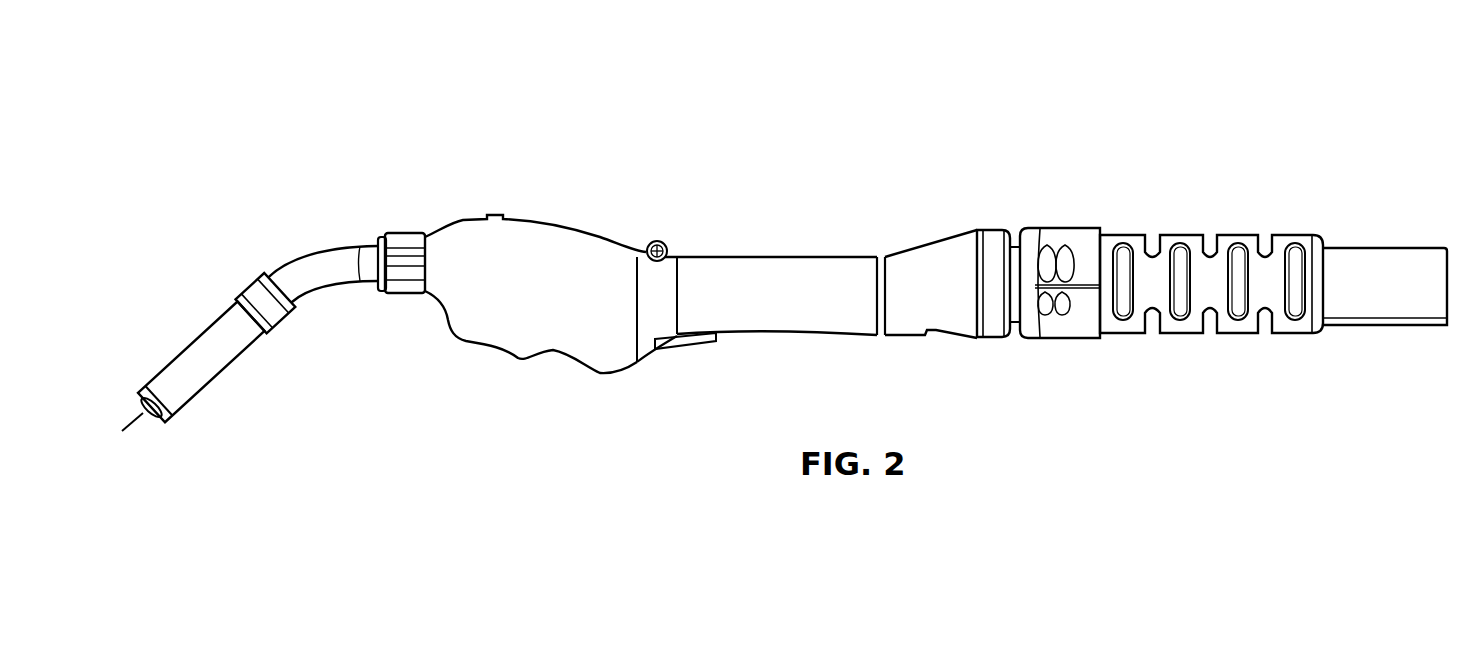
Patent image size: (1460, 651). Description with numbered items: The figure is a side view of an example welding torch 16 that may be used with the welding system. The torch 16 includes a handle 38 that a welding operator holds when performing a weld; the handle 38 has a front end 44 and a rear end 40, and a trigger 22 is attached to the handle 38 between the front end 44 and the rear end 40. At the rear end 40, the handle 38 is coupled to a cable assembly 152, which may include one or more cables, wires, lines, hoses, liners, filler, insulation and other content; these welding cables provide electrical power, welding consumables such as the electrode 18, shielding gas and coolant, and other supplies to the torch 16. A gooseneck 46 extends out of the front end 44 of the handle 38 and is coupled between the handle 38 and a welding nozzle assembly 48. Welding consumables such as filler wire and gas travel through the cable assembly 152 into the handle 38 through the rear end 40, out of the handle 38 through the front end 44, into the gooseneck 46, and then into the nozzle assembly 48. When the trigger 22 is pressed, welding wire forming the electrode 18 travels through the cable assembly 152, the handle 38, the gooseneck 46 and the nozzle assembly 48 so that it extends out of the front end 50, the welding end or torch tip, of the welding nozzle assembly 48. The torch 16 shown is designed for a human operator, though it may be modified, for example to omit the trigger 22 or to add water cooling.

The welding torch 16 is at (410, 70).
The electrode 18 is at (142, 421).
The trigger 22 is at (665, 351).
The handle 38 is at (750, 262).
The rear end 40 is at (1005, 218).
The front end 44 is at (424, 210).
The gooseneck 46 is at (322, 272).
The welding nozzle assembly 48 is at (227, 348).
The front end 50 is at (122, 396).
The cable assembly 152 is at (1385, 318).